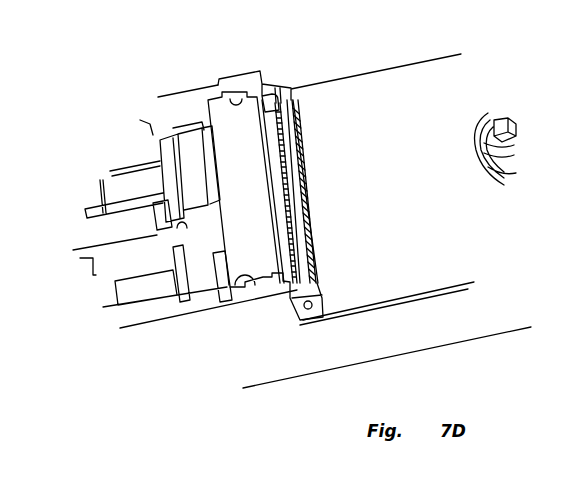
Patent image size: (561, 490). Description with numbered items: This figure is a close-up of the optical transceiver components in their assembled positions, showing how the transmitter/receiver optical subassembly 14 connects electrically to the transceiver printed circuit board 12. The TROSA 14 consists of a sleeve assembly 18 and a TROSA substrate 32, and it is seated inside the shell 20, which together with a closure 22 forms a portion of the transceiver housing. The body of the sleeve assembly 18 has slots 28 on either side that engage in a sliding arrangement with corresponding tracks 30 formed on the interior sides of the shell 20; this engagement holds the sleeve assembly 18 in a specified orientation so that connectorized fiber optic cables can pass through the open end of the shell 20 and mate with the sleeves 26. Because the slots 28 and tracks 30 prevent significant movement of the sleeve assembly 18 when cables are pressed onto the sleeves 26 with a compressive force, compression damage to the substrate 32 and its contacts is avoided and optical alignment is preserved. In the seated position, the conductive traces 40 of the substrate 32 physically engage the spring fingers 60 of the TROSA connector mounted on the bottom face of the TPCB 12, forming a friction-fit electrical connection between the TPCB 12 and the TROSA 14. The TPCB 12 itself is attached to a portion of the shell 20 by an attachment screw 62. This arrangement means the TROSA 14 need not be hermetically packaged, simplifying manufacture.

The transceiver printed circuit board 12 is at (374, 88).
The transmitter/receiver optical subassembly 14 is at (180, 109).
The sleeve assembly 18 is at (252, 100).
The shell 20 is at (416, 330).
The closure 22 is at (382, 485).
The sleeves 26 is at (142, 173).
The slots 28 is at (236, 100).
The tracks 30 is at (220, 83).
The TROSA substrate 32 is at (282, 108).
The conductive traces 40 is at (287, 100).
The spring fingers 60 is at (310, 217).
The attachment screw 62 is at (493, 117).